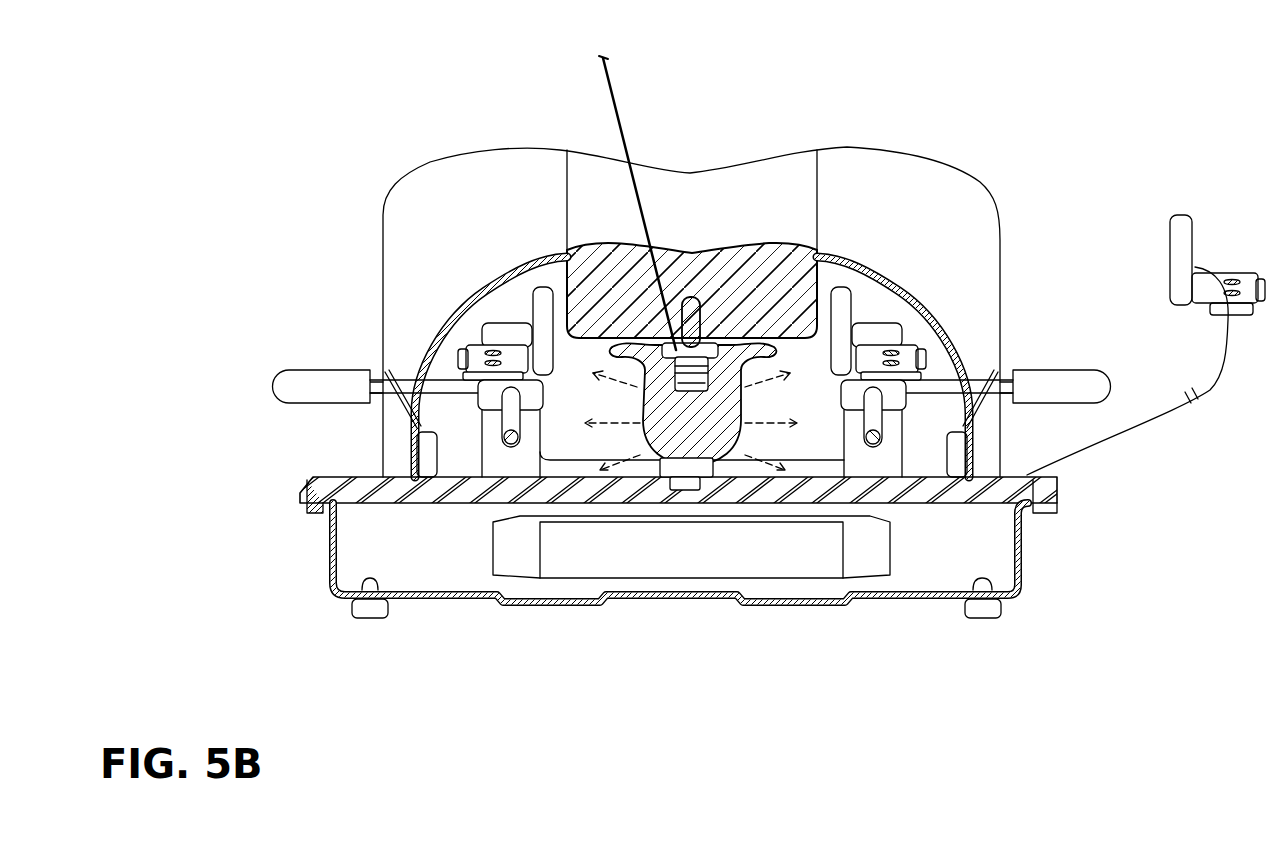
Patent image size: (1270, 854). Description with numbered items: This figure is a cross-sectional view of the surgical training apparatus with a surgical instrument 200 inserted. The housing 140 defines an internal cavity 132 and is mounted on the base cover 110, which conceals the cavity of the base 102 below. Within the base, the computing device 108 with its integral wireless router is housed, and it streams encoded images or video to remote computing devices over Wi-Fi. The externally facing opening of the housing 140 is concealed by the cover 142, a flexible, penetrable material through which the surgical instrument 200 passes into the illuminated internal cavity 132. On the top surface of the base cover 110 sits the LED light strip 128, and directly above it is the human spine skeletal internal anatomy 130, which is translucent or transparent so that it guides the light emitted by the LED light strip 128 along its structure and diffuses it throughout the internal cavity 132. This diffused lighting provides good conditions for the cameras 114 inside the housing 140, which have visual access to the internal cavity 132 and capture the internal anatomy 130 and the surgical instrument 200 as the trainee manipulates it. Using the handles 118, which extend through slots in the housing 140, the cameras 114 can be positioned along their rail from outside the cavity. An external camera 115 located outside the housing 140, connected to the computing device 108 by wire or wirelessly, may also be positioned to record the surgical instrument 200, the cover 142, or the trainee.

The base 102 is at (1023, 548).
The computing device 108 is at (585, 557).
The base cover 110 is at (1060, 480).
The camera 114 is at (540, 317).
The external camera 115 is at (1180, 223).
The handle 118 is at (303, 382).
The LED light strip 128 is at (690, 497).
The internal anatomy 130 is at (741, 431).
The internal cavity 132 is at (812, 430).
The housing 140 is at (458, 177).
The cover 142 is at (768, 175).
The surgical instrument 200 is at (623, 122).